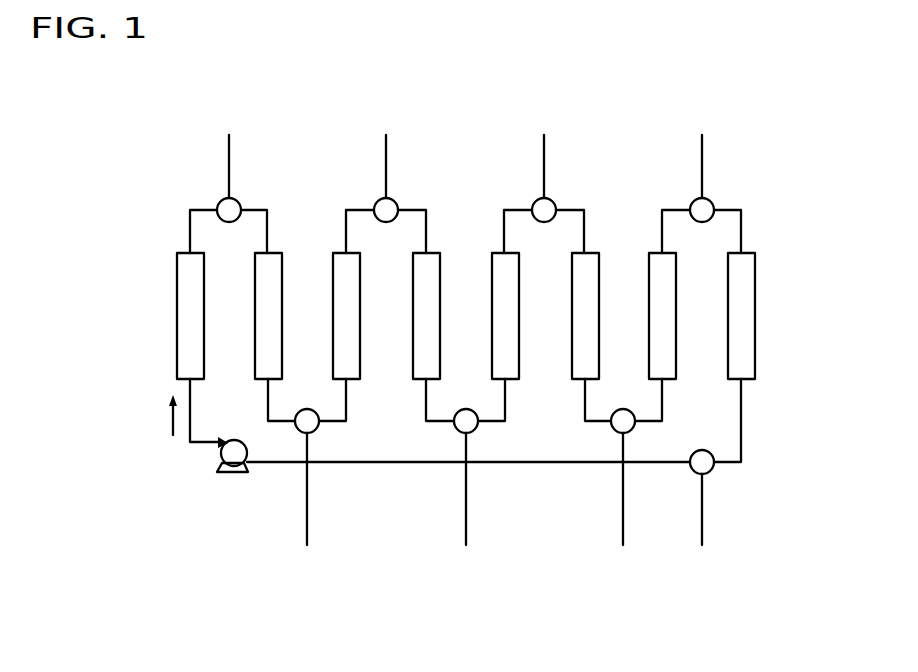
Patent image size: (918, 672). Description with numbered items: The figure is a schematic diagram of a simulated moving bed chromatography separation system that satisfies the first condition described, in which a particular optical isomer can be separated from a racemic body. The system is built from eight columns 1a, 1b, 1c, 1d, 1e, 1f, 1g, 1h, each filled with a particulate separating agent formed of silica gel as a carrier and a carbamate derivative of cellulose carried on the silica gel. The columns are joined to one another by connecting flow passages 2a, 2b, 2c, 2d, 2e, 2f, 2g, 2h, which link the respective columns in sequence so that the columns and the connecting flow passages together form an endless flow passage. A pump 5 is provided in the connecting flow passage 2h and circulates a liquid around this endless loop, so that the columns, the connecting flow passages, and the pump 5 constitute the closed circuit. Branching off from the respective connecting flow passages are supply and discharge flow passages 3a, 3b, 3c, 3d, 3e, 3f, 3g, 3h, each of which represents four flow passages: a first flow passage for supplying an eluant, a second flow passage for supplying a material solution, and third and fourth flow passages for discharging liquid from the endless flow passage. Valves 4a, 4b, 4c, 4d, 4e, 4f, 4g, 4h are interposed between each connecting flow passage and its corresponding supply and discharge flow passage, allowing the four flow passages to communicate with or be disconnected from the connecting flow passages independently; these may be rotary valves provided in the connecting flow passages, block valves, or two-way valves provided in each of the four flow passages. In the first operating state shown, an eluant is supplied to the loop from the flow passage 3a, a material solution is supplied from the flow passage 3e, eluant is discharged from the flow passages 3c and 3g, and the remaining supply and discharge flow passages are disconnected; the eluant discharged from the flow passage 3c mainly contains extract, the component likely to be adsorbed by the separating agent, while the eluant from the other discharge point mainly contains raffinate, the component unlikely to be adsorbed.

The column 1a is at (175, 282).
The column 1b is at (253, 348).
The column 1c is at (332, 283).
The column 1d is at (413, 350).
The column 1e is at (492, 283).
The column 1f is at (572, 350).
The column 1g is at (649, 283).
The column 1h is at (728, 350).
The connecting flow passage 2a is at (190, 212).
The connecting flow passage 2b is at (297, 430).
The connecting flow passage 2c is at (346, 212).
The connecting flow passage 2d is at (442, 425).
The connecting flow passage 2e is at (504, 212).
The connecting flow passage 2f is at (598, 423).
The connecting flow passage 2g is at (662, 212).
The connecting flow passage 2h is at (742, 403).
The supply and discharge flow passage 3a is at (227, 160).
The supply and discharge flow passage 3b is at (306, 495).
The supply and discharge flow passage 3c is at (386, 162).
The supply and discharge flow passage 3d is at (465, 502).
The supply and discharge flow passage 3e is at (544, 162).
The supply and discharge flow passage 3f is at (623, 500).
The supply and discharge flow passage 3g is at (700, 167).
The supply and discharge flow passage 3h is at (703, 500).
The valve 4a is at (240, 203).
The valve 4b is at (315, 430).
The valve 4c is at (397, 203).
The valve 4d is at (476, 430).
The valve 4e is at (555, 203).
The valve 4f is at (633, 430).
The valve 4g is at (713, 203).
The valve 4h is at (712, 472).
The pump 5 is at (232, 473).